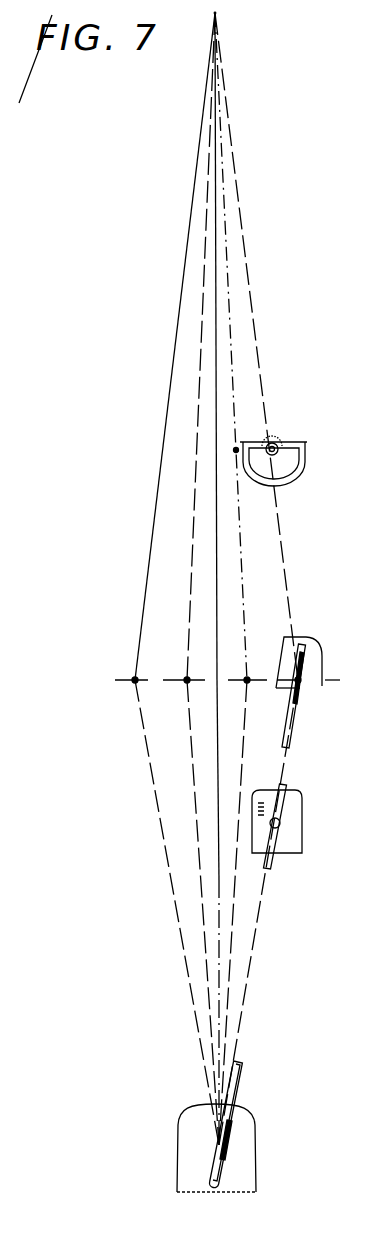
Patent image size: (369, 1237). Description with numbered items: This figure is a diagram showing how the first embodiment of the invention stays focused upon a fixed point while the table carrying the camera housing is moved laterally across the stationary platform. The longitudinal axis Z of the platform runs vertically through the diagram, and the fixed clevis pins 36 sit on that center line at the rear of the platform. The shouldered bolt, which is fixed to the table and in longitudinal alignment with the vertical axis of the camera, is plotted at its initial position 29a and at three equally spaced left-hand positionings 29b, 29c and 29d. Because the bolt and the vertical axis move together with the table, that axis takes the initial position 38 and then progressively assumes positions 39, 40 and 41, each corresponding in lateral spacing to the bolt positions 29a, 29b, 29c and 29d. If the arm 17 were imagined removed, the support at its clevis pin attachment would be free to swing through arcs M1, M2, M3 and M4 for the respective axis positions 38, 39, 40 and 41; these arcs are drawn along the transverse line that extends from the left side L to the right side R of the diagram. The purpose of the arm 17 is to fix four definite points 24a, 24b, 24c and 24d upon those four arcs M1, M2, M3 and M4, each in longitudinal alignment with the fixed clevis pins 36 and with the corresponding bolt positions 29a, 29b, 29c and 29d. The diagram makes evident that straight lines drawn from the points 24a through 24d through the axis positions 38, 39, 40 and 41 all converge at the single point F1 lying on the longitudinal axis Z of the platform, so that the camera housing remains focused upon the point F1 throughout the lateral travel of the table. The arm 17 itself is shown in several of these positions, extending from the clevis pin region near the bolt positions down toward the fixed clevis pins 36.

The common focal point F1 is at (221, 18).
The longitudinal axis z–z of the platform Z is at (215, 118).
The fourth position of the vertical axis x–x 41 is at (162, 452).
The third position of the vertical axis x–x 40 is at (197, 452).
The second position of the vertical axis x–x 39 is at (236, 450).
The initial position of the vertical axis x–x 38 is at (278, 443).
The left reference line L is at (197, 683).
The right reference R is at (340, 683).
The arc m1 M1 is at (307, 681).
The arc m2 M2 is at (252, 688).
The arc m3 M3 is at (193, 688).
The arc m4 M4 is at (141, 688).
The first clevis pin attachment point 24a is at (300, 683).
The second clevis pin attachment point 24b is at (256, 678).
The third clevis pin attachment point 24c is at (186, 678).
The fourth clevis pin attachment point 24d is at (161, 659).
The arm 17 is at (298, 728).
The initial position of the shouldered bolt 29a is at (283, 822).
The first left-hand position of the shouldered bolt 29b is at (240, 823).
The second left-hand position of the shouldered bolt 29c is at (197, 822).
The third left-hand position of the shouldered bolt 29d is at (160, 822).
The fixed clevis pins 36 is at (227, 1158).